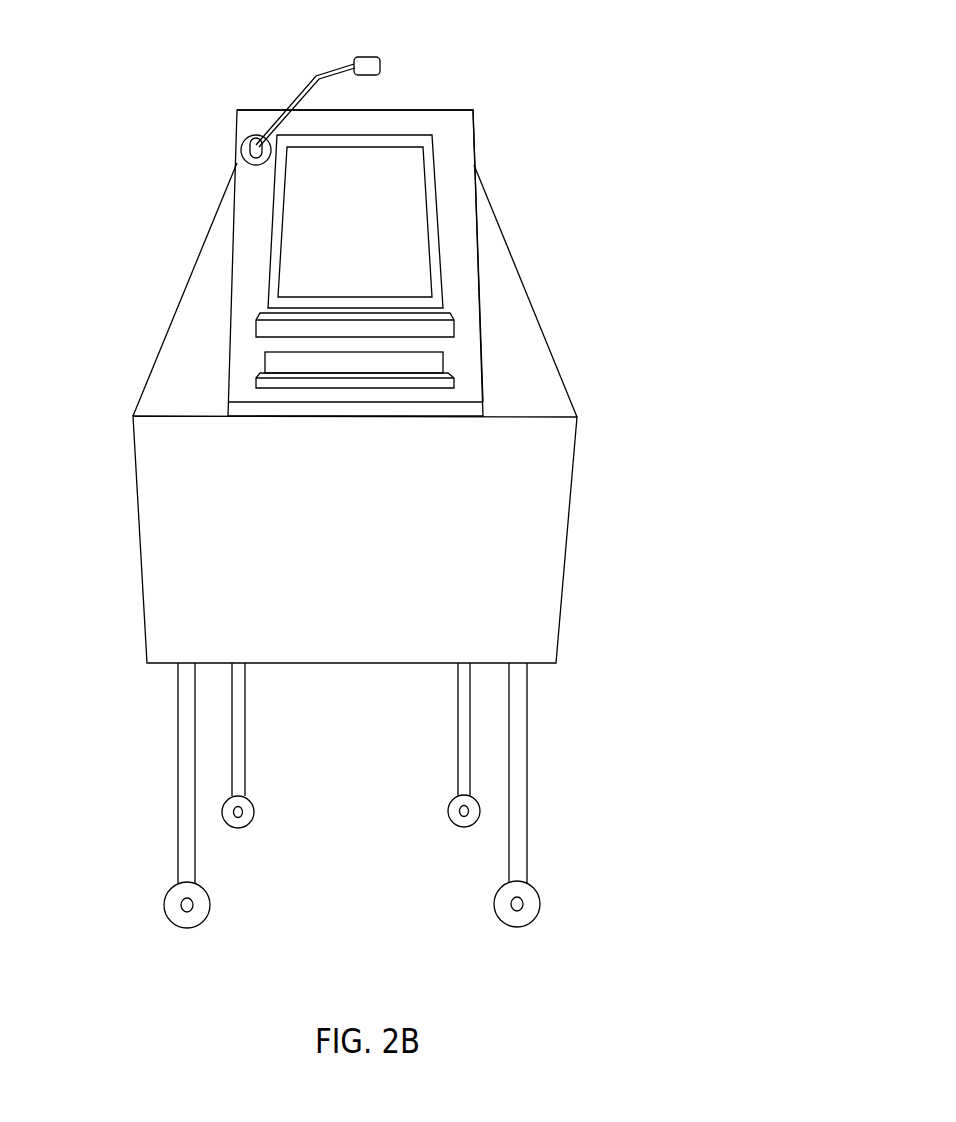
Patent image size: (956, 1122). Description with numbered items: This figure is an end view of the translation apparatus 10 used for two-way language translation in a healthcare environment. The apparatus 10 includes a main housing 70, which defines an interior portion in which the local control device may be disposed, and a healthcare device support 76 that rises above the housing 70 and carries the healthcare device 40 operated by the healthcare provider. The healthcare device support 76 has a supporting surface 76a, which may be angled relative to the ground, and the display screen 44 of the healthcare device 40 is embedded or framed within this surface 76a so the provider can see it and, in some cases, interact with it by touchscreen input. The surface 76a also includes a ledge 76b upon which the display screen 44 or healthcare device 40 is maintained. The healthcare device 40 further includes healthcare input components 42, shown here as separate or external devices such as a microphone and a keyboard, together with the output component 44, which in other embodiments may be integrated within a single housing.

The apparatus 10 is at (326, 39).
The healthcare device 40 is at (438, 120).
The healthcare input component 42 is at (443, 360).
The healthcare output component 44 is at (313, 237).
The main housing 70 is at (573, 465).
The healthcare device support 76 is at (480, 252).
The supporting surface 76a is at (462, 210).
The ledge 76b is at (455, 330).